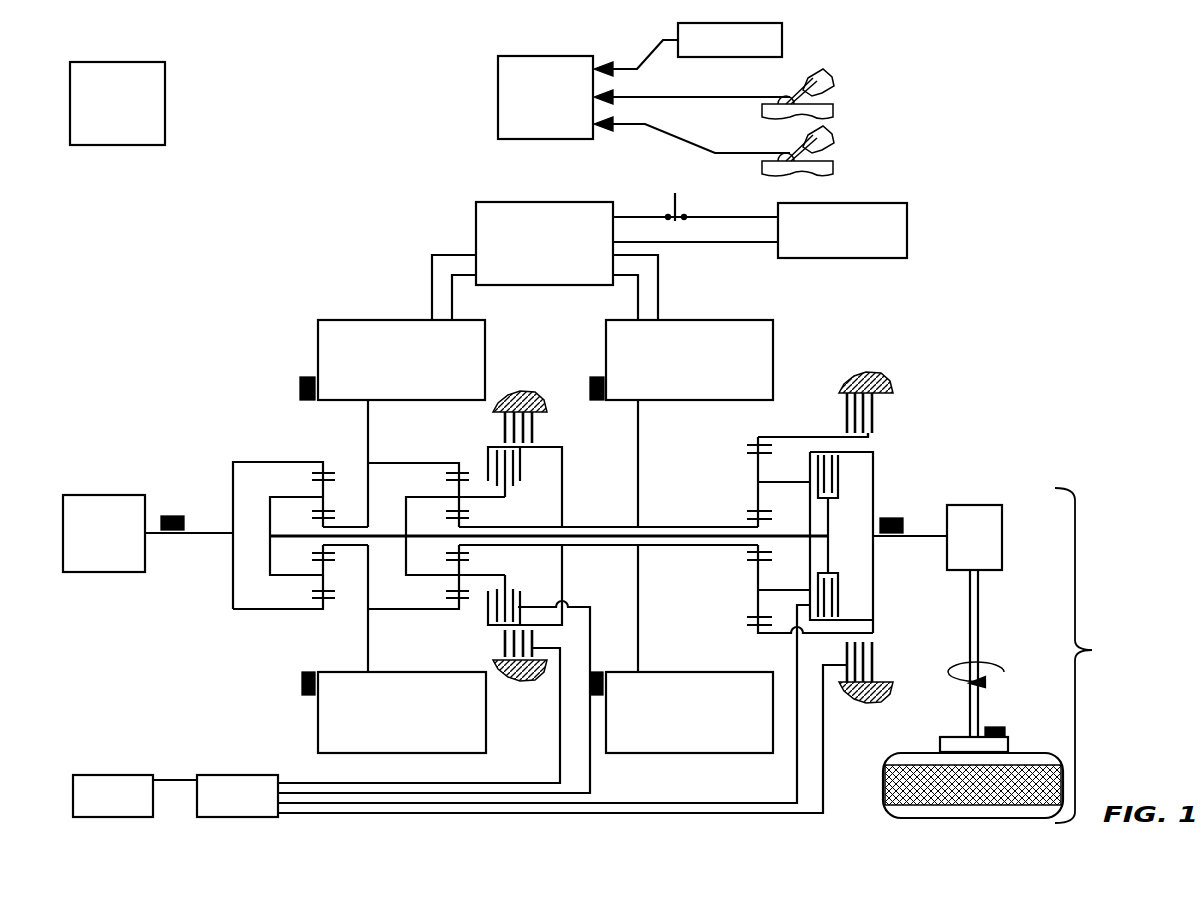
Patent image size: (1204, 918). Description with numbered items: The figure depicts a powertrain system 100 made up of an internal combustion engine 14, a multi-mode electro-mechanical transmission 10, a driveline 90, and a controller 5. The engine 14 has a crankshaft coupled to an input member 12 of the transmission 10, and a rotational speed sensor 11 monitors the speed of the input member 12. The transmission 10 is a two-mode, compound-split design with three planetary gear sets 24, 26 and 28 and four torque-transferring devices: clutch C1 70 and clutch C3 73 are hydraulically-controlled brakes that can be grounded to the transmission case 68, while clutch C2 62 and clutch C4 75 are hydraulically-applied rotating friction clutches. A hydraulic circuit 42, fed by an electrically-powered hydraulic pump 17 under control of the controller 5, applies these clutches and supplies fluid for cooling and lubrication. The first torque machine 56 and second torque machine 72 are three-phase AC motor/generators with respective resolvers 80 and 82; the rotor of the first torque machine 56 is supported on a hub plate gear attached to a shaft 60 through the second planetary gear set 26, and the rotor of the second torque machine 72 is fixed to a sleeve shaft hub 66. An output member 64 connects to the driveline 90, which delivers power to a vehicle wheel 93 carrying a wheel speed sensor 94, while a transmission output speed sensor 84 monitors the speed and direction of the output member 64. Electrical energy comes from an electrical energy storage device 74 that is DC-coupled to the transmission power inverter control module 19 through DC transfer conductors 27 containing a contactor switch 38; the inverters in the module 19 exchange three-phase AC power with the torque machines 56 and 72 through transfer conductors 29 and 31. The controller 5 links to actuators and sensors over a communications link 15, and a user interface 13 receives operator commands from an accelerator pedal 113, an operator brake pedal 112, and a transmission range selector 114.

The controller 5 is at (117, 103).
The multi-mode electro-mechanical transmission 10 is at (275, 272).
The rotational speed sensor 11 is at (172, 514).
The input member 12 is at (213, 530).
The user interface 13 is at (545, 97).
The internal combustion engine 14 is at (104, 533).
The communications link 15 is at (117, 156).
The electrically-powered hydraulic pump 17 is at (113, 796).
The transmission power inverter control module 19 is at (544, 243).
The first planetary gear set 24 is at (306, 442).
The second planetary gear set 26 is at (449, 443).
The DC transfer conductors 27 is at (627, 216).
The third planetary gear set 28 is at (742, 429).
The transfer conductors 29 is at (432, 288).
The transfer conductors 31 is at (658, 282).
The contactor switch 38 is at (673, 194).
The hydraulic circuit 42 is at (522, 711).
The first torque machine 56 is at (402, 536).
The shaft 60 is at (805, 534).
The clutch C2 62 is at (855, 476).
The output member 64 is at (921, 533).
The sleeve shaft hub 66 is at (670, 526).
The transmission case 68 is at (521, 393).
The clutch C1 70 is at (831, 402).
The second torque machine 72 is at (689, 536).
The clutch C3 73 is at (547, 426).
The electrical energy storage device 74 is at (842, 230).
The clutch C4 75 is at (530, 484).
The resolver 80 is at (300, 388).
The resolver 82 is at (596, 376).
The transmission output speed sensor 84 is at (893, 516).
The driveline 90 is at (1106, 648).
The vehicle wheel 93 is at (940, 745).
The wheel speed sensor 94 is at (995, 726).
The powertrain system 100 is at (911, 157).
The operator brake pedal 112 is at (790, 152).
The accelerator pedal 113 is at (790, 95).
The transmission range selector 114 is at (688, 49).